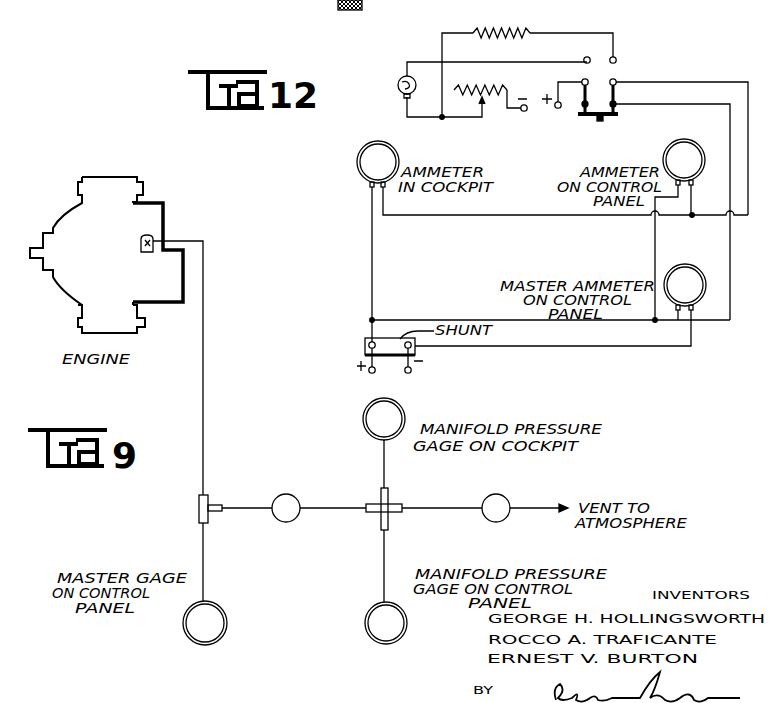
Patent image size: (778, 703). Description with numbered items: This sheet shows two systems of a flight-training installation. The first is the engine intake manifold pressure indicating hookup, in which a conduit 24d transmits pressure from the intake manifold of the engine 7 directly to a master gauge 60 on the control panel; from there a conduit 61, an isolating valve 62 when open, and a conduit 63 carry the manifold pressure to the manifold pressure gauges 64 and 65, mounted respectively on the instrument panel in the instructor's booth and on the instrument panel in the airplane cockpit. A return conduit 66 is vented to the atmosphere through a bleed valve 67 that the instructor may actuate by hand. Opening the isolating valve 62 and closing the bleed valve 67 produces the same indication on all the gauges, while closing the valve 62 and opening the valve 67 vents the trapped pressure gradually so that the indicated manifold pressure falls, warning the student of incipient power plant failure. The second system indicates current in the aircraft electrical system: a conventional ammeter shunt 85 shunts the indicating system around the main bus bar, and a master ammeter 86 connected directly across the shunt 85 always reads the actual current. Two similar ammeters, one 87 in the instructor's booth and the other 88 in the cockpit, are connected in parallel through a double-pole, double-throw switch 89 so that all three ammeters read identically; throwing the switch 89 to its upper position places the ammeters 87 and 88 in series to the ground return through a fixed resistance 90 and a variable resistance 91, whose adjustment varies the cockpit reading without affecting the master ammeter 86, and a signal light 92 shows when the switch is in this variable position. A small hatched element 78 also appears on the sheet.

In FIG. 12, the hatched block 78 is at (362, 8).
In FIG. 12, the fixed resistance 90 is at (501, 23).
In FIG. 12, the variable resistance 91 is at (480, 82).
In FIG. 12, the signal light 92 is at (399, 93).
In FIG. 12, the double-pole, double-throw switch 89 is at (616, 97).
In FIG. 12, the ammeter 88 is at (399, 157).
In FIG. 12, the ammeter 87 is at (664, 150).
In FIG. 12, the master ammeter 86 is at (684, 266).
In FIG. 12, the ammeter shunt 85 is at (364, 344).
In FIG. 9, the engine 7 is at (146, 191).
In FIG. 9, the conduit 24d is at (207, 400).
In FIG. 9, the conduit 61 is at (236, 514).
In FIG. 9, the isolating valve 62 is at (292, 523).
In FIG. 9, the master gauge 60 is at (222, 609).
In FIG. 9, the manifold pressure gauge 65 is at (363, 418).
In FIG. 9, the conduit 63 is at (383, 563).
In FIG. 9, the return conduit 66 is at (428, 512).
In FIG. 9, the bleed valve 67 is at (506, 521).
In FIG. 9, the manifold pressure gauge 64 is at (366, 614).